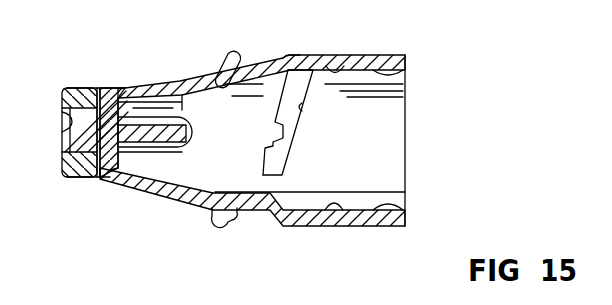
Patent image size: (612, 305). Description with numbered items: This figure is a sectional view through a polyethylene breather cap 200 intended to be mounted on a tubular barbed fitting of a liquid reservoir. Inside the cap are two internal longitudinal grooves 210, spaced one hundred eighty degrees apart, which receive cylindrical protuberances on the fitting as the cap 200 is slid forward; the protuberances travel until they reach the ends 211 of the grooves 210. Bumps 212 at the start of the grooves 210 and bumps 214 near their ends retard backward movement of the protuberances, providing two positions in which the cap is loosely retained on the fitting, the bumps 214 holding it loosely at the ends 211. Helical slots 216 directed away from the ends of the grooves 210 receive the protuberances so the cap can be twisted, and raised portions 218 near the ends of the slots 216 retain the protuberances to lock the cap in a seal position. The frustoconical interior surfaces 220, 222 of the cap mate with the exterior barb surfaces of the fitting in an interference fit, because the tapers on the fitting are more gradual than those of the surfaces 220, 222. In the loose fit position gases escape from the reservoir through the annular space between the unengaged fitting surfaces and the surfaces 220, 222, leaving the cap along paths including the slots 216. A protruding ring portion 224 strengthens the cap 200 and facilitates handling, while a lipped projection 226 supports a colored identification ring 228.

The breather cap 200 is at (143, 53).
The internal longitudinal grooves 210 is at (367, 78).
The ends of the grooves 211 is at (293, 55).
The bumps 212 is at (406, 73).
The bumps 214 is at (341, 68).
The helical slots 216 is at (303, 108).
The raised portions 218 is at (275, 135).
The frustoconical interior surface 220 is at (131, 99).
The frustoconical interior surface 222 is at (195, 93).
The protruding ring portion 224 is at (212, 214).
The lipped projection 226 is at (62, 152).
The colored identification ring 228 is at (78, 177).